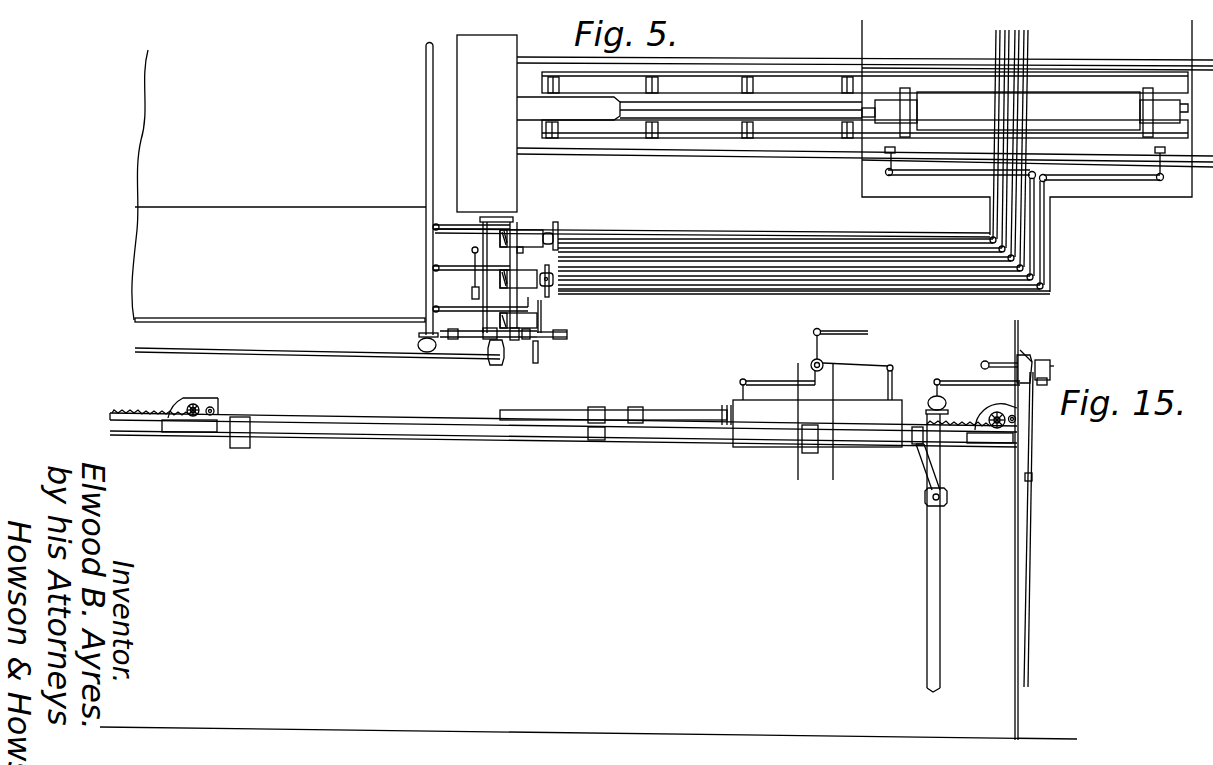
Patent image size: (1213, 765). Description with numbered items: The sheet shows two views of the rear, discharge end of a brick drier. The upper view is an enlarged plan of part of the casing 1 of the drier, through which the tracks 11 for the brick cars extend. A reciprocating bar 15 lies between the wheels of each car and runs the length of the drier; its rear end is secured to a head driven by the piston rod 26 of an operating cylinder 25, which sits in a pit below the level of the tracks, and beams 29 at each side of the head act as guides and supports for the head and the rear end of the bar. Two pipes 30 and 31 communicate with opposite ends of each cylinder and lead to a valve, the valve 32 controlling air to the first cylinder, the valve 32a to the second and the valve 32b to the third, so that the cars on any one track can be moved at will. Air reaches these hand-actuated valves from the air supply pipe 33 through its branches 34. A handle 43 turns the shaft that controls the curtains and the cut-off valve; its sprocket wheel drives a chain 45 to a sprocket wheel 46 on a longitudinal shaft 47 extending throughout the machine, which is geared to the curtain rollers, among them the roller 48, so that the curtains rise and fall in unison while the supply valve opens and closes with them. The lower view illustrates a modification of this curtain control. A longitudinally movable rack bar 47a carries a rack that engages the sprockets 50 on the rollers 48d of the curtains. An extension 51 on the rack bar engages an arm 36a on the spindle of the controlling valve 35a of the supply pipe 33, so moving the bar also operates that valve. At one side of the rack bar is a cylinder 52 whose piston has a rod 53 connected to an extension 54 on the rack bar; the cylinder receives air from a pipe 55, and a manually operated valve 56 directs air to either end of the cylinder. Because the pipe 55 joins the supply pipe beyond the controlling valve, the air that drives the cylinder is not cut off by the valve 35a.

In FIG. 5, the casing of the drier 1 is at (158, 188).
In FIG. 15, the casing of the drier 1 is at (995, 552).
In FIG. 5, the tracks 11 is at (891, 66).
In FIG. 5, the reciprocating bar 15 is at (531, 110).
In FIG. 5, the operating cylinder 25 is at (1025, 112).
In FIG. 5, the piston rod 26 is at (708, 110).
In FIG. 5, the beams 29 is at (716, 96).
In FIG. 5, the pipe 30 is at (950, 178).
In FIG. 5, the pipe 31 is at (1103, 170).
In FIG. 5, the valve 32 is at (540, 319).
In FIG. 15, the valve 32 is at (1036, 363).
In FIG. 5, the valve 32a is at (527, 291).
In FIG. 5, the valve 32b is at (519, 234).
In FIG. 5, the air supply pipe 33 is at (425, 293).
In FIG. 15, the air supply pipe 33 is at (940, 648).
In FIG. 5, the branches 34 is at (444, 232).
In FIG. 15, the branches 34 is at (975, 378).
In FIG. 15, the controlling valve 35a is at (948, 497).
In FIG. 15, the arm 36a is at (918, 468).
In FIG. 5, the handle 43 is at (546, 341).
In FIG. 5, the chain 45 is at (541, 360).
In FIG. 5, the sprocket wheel 46 is at (535, 357).
In FIG. 5, the longitudinal shaft 47 is at (352, 357).
In FIG. 15, the rack bar 47a is at (430, 426).
In FIG. 5, the roller 48 is at (487, 128).
In FIG. 15, the rollers of the curtains 48d is at (199, 406).
In FIG. 15, the sprockets 50 is at (190, 404).
In FIG. 15, the extension 51 is at (907, 440).
In FIG. 15, the cylinder 52 is at (817, 423).
In FIG. 15, the rod 53 is at (676, 407).
In FIG. 15, the extension 54 is at (636, 405).
In FIG. 15, the pipe 55 is at (841, 341).
In FIG. 15, the valve 56 is at (811, 362).